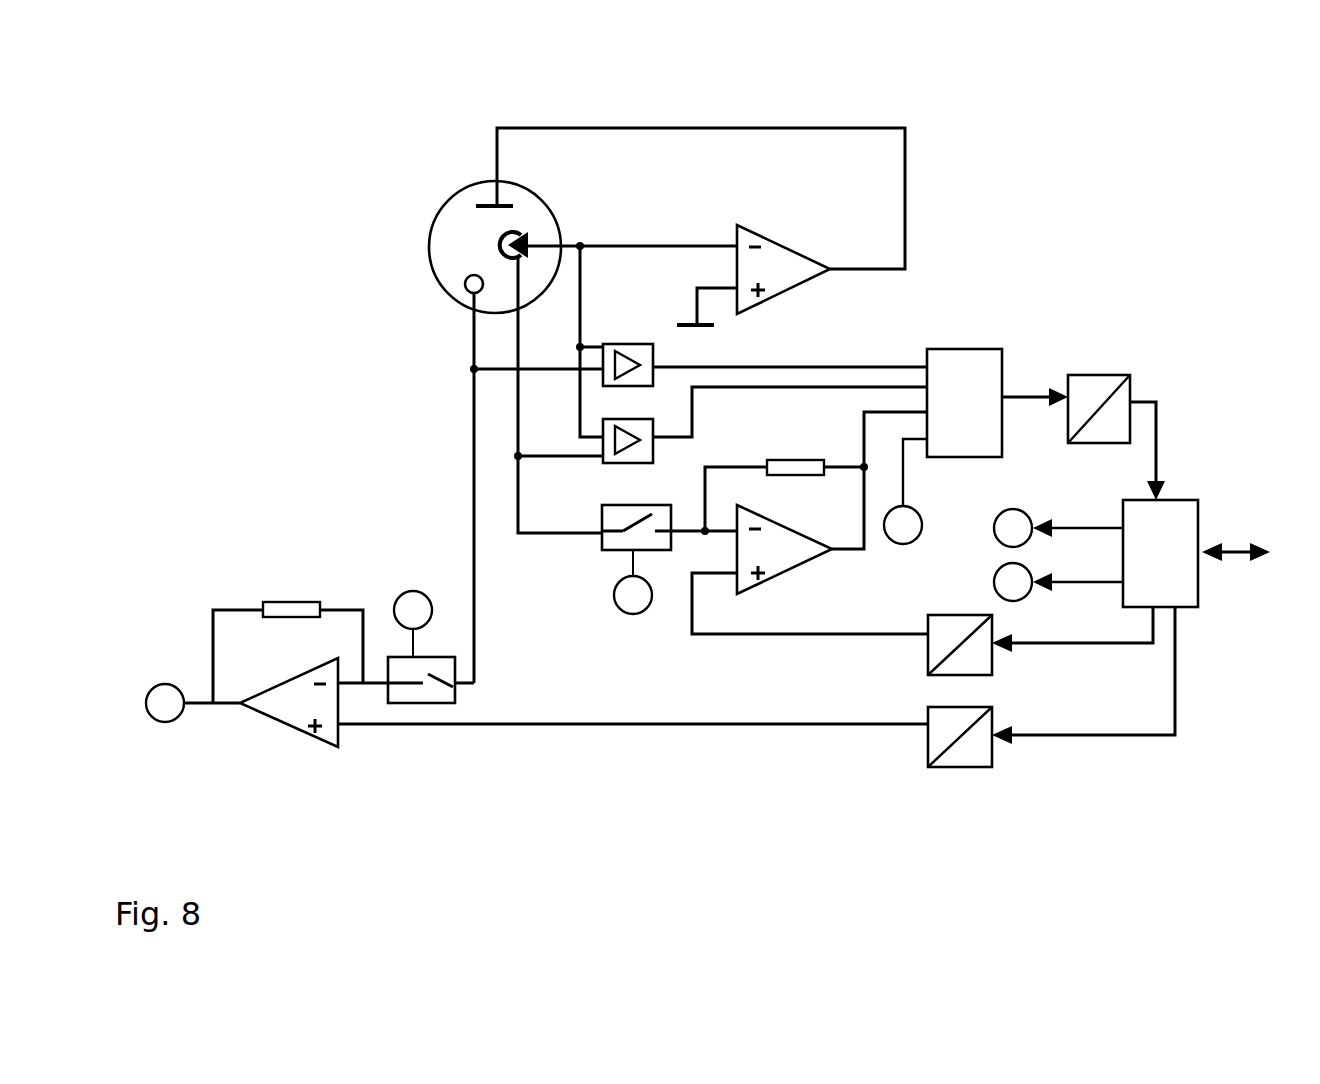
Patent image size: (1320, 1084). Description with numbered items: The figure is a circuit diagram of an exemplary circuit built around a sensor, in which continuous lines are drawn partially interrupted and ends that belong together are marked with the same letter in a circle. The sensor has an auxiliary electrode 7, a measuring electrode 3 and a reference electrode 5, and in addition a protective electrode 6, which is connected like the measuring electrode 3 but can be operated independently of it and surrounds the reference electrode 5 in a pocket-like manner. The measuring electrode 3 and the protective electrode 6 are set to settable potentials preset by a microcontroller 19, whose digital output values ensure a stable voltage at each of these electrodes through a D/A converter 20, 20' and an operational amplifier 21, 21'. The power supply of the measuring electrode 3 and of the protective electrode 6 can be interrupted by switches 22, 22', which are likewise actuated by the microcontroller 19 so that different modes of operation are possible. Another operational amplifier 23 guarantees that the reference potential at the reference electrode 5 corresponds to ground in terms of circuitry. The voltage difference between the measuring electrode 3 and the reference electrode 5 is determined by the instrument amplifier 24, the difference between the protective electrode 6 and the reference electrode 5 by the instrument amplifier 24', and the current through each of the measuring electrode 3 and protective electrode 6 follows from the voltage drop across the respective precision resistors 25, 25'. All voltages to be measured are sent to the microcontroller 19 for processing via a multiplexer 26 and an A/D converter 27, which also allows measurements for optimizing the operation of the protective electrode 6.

The measuring electrode 3 is at (463, 285).
The reference electrode 5 is at (517, 223).
The protective electrode 6 is at (493, 245).
The auxiliary electrode 7 is at (490, 184).
The microcontroller 19 is at (1182, 523).
The D/A converter 20 is at (700, 818).
The D/A converter 20' is at (859, 716).
The operational amplifier 21 is at (268, 788).
The operational amplifier 21' is at (790, 664).
The switch 22 is at (459, 732).
The switch 22' is at (652, 684).
The operational amplifier 23 is at (770, 258).
The instrument amplifier 24 is at (606, 413).
The instrument amplifier 24' is at (606, 469).
The precision resistor 25 is at (863, 354).
The precision resistor 25' is at (280, 573).
The multiplexer 26 is at (962, 373).
The A/D converter 27 is at (1102, 385).